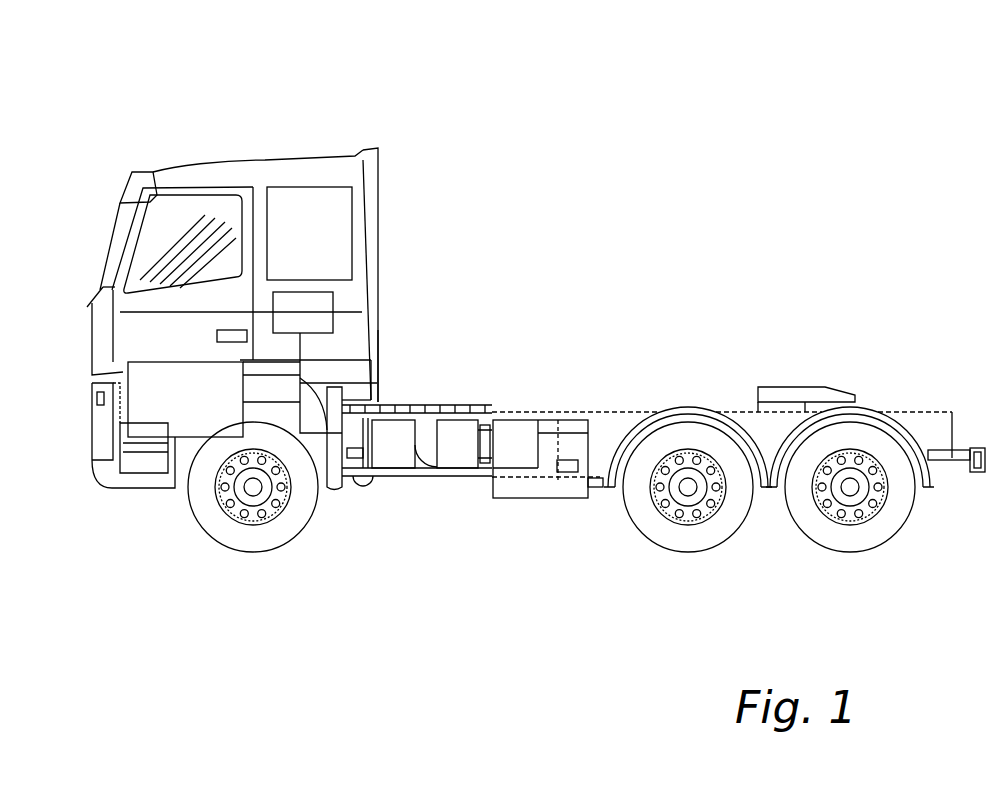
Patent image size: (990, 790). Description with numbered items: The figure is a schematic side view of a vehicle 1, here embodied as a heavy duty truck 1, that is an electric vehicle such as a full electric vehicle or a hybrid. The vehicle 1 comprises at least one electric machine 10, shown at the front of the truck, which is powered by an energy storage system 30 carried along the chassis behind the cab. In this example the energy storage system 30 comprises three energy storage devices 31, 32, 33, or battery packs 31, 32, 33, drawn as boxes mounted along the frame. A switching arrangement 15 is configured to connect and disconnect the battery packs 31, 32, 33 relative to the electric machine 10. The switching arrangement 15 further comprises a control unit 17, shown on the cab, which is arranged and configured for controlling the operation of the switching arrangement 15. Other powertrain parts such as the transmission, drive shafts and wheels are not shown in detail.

The vehicle 1 is at (202, 93).
The electric machine 10 is at (150, 437).
The switching arrangement 15 is at (413, 353).
The control unit 17 is at (333, 301).
The energy storage system 30 is at (472, 382).
The energy storage device 31 is at (393, 468).
The energy storage device 32 is at (448, 468).
The energy storage device 33 is at (512, 468).